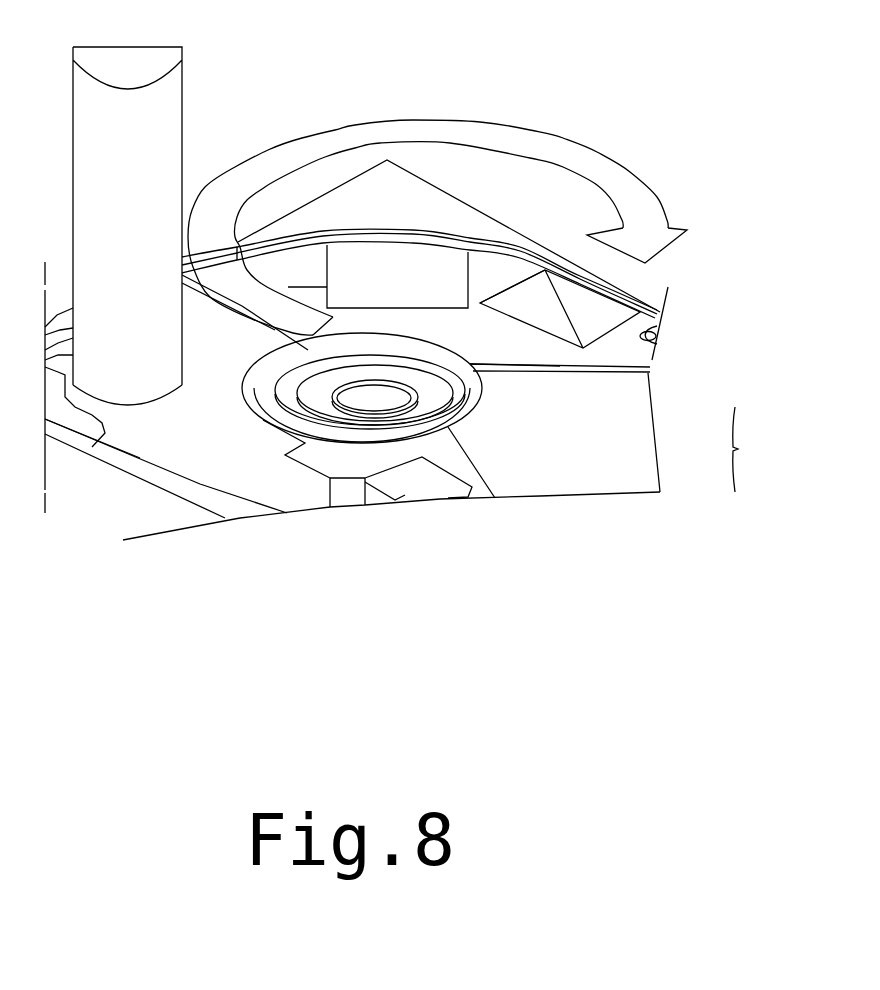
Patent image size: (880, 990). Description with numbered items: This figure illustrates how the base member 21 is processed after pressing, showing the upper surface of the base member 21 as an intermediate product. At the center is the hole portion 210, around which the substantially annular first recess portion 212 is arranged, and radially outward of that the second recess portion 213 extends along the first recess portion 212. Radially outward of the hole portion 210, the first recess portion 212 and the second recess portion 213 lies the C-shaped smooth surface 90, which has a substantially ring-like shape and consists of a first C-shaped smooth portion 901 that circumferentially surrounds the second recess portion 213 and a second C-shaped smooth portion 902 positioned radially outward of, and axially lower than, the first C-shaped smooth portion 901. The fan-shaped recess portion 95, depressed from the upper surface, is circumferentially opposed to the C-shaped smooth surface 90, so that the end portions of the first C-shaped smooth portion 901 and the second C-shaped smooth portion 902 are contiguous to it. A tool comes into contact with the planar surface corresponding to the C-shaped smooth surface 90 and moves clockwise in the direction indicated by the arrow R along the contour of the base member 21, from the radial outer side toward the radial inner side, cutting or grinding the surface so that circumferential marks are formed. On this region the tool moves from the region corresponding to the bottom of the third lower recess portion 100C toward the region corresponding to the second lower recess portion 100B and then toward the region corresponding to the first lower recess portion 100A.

The arrow R is at (433, 125).
The base member 21 is at (637, 82).
The first lower recess portion 100A is at (583, 310).
The second lower recess portion 100B is at (427, 273).
The third lower recess portion 100C is at (183, 437).
The C-shaped smooth surface 90 is at (760, 449).
The first C-shaped smooth portion 901 is at (513, 345).
The second C-shaped smooth portion 902 is at (502, 275).
The fan-shaped recess portion 95 is at (568, 477).
The hole portion 210 is at (383, 397).
The first recess portion 212 is at (347, 425).
The second recess portion 213 is at (300, 418).